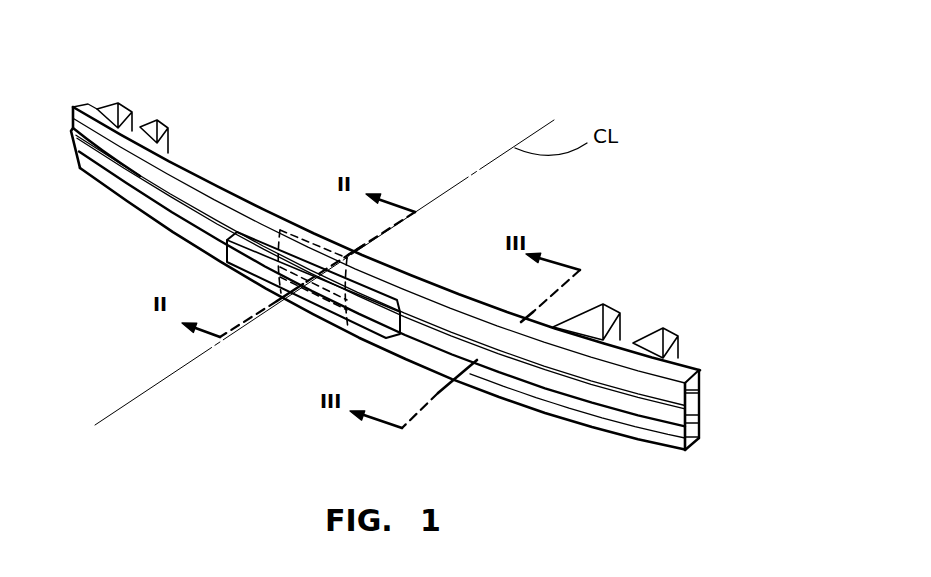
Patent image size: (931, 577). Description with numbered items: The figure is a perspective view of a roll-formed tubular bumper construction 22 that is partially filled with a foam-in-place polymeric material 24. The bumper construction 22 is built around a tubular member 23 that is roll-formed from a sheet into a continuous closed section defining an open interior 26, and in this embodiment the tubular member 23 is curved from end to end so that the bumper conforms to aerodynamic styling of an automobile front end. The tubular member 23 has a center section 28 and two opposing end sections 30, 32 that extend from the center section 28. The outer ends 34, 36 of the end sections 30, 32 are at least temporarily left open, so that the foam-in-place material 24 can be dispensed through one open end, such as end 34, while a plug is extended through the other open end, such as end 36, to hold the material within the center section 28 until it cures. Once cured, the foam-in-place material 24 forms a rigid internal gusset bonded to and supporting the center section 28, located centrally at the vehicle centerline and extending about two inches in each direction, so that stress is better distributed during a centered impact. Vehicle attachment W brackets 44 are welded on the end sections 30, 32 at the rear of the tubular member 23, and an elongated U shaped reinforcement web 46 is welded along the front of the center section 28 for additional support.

The bumper construction 22 is at (518, 108).
The tubular member 23 is at (710, 373).
The foam-in-place polymeric material 24 is at (303, 236).
The open interior 26 is at (697, 427).
The center section 28 is at (297, 318).
The end section 30 is at (587, 427).
The end section 32 is at (118, 197).
The outer end 34 is at (700, 418).
The outer end 36 is at (87, 104).
The vehicle attachment W brackets 44 is at (168, 127).
The U shaped reinforcement web 46 is at (367, 330).